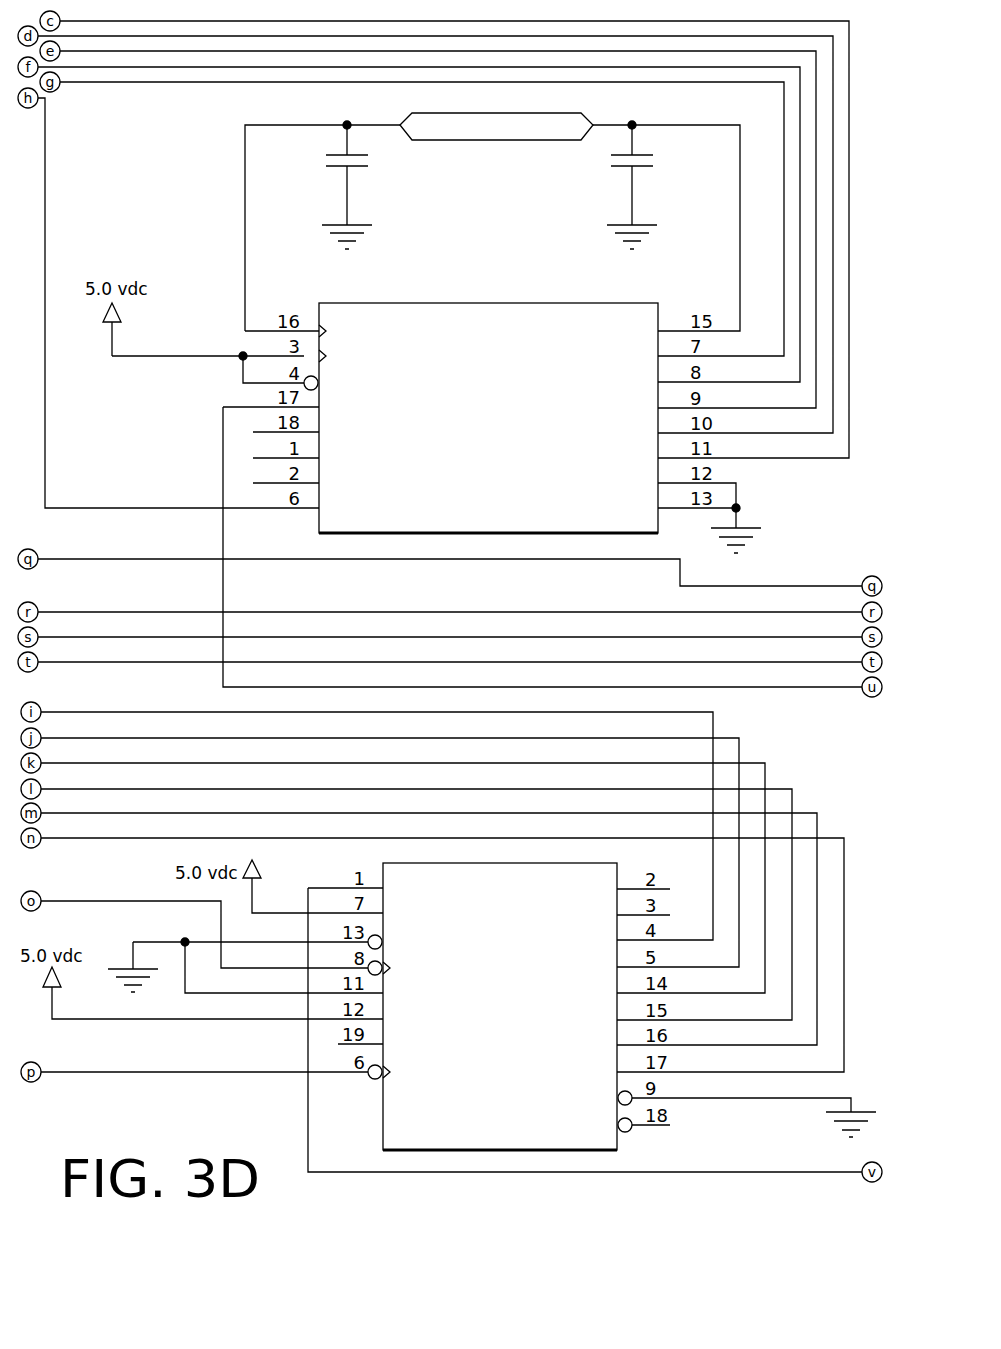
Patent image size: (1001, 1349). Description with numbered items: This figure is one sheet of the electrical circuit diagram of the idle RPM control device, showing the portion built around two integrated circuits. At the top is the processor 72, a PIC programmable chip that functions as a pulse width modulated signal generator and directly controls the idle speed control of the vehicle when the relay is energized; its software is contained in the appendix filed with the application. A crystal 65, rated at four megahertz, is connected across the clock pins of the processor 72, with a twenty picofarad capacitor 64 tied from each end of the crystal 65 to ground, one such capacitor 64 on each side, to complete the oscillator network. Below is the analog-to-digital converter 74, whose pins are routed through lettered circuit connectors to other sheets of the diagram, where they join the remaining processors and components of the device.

The capacitor 64 is at (338, 167).
The crystal 65 is at (505, 130).
The pulse width modulated signal generator 72 is at (513, 318).
The analog-to-digital converter 74 is at (410, 1110).